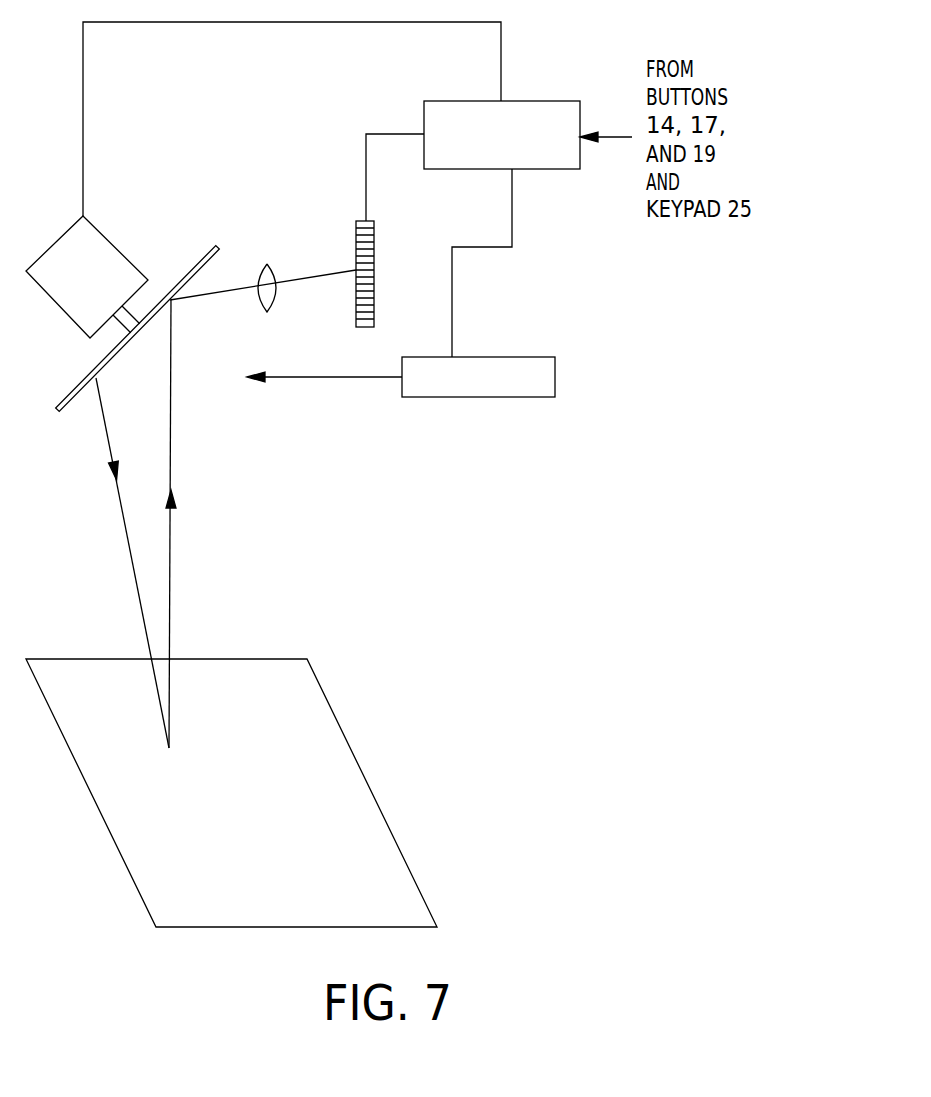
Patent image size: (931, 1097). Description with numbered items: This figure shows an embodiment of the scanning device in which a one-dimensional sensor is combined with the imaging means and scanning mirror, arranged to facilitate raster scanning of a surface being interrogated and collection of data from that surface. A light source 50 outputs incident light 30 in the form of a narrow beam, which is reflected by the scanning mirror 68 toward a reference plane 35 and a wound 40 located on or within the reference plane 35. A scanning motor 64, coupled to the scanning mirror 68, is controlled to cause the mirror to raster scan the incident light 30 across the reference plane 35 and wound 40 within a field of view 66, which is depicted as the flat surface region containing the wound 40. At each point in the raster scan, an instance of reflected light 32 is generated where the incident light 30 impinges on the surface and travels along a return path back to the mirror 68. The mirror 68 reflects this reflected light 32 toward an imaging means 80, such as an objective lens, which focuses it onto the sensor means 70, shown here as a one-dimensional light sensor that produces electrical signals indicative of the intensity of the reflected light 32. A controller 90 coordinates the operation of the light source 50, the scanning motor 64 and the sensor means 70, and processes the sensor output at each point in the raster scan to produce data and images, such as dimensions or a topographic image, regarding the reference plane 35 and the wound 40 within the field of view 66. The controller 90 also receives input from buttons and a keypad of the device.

The controller 90 is at (457, 98).
The scanning motor 64 is at (88, 233).
The scanning mirror 68 is at (62, 397).
The imaging means 80 is at (275, 278).
The sensor means 70 is at (375, 262).
The light source 50 is at (487, 357).
The reflected light 32 is at (172, 443).
The incident light 30 is at (118, 495).
The reference plane 35 is at (283, 793).
The wound 40 is at (283, 793).
The field of view 66 is at (323, 773).